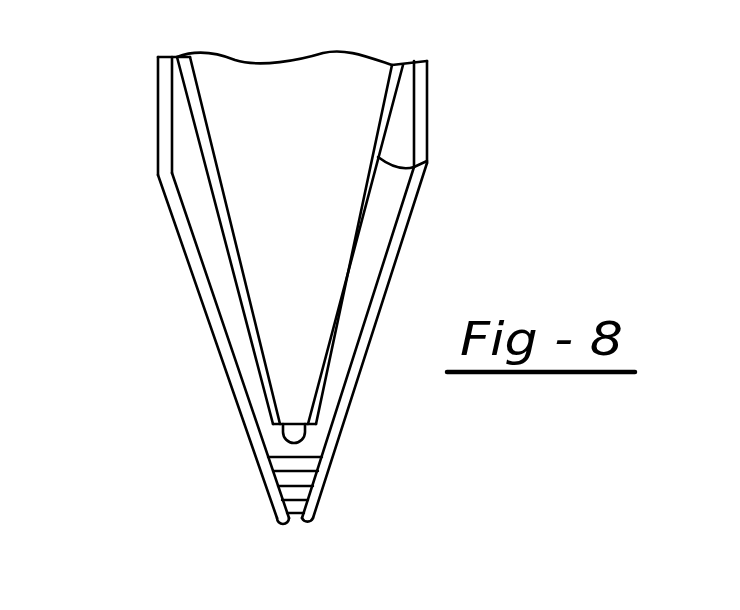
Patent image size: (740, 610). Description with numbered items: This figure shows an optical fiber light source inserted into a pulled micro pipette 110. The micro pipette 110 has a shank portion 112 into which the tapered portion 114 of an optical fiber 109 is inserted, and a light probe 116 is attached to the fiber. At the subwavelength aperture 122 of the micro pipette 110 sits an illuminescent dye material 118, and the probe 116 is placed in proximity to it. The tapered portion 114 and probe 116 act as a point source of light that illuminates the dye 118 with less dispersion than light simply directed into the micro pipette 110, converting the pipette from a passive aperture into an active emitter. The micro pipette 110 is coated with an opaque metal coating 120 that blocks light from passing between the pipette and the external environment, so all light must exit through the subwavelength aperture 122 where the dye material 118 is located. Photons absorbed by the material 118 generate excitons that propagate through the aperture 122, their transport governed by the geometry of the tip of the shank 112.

The optical fiber 109 is at (365, 93).
The micro pipette 110 is at (172, 127).
The shank portion 112 is at (228, 343).
The tapered portion 114 is at (415, 168).
The opaque metal coating 120 is at (394, 282).
The probe 116 is at (303, 436).
The illuminescent material 118 is at (287, 477).
The subwavelength aperture 122 is at (295, 525).